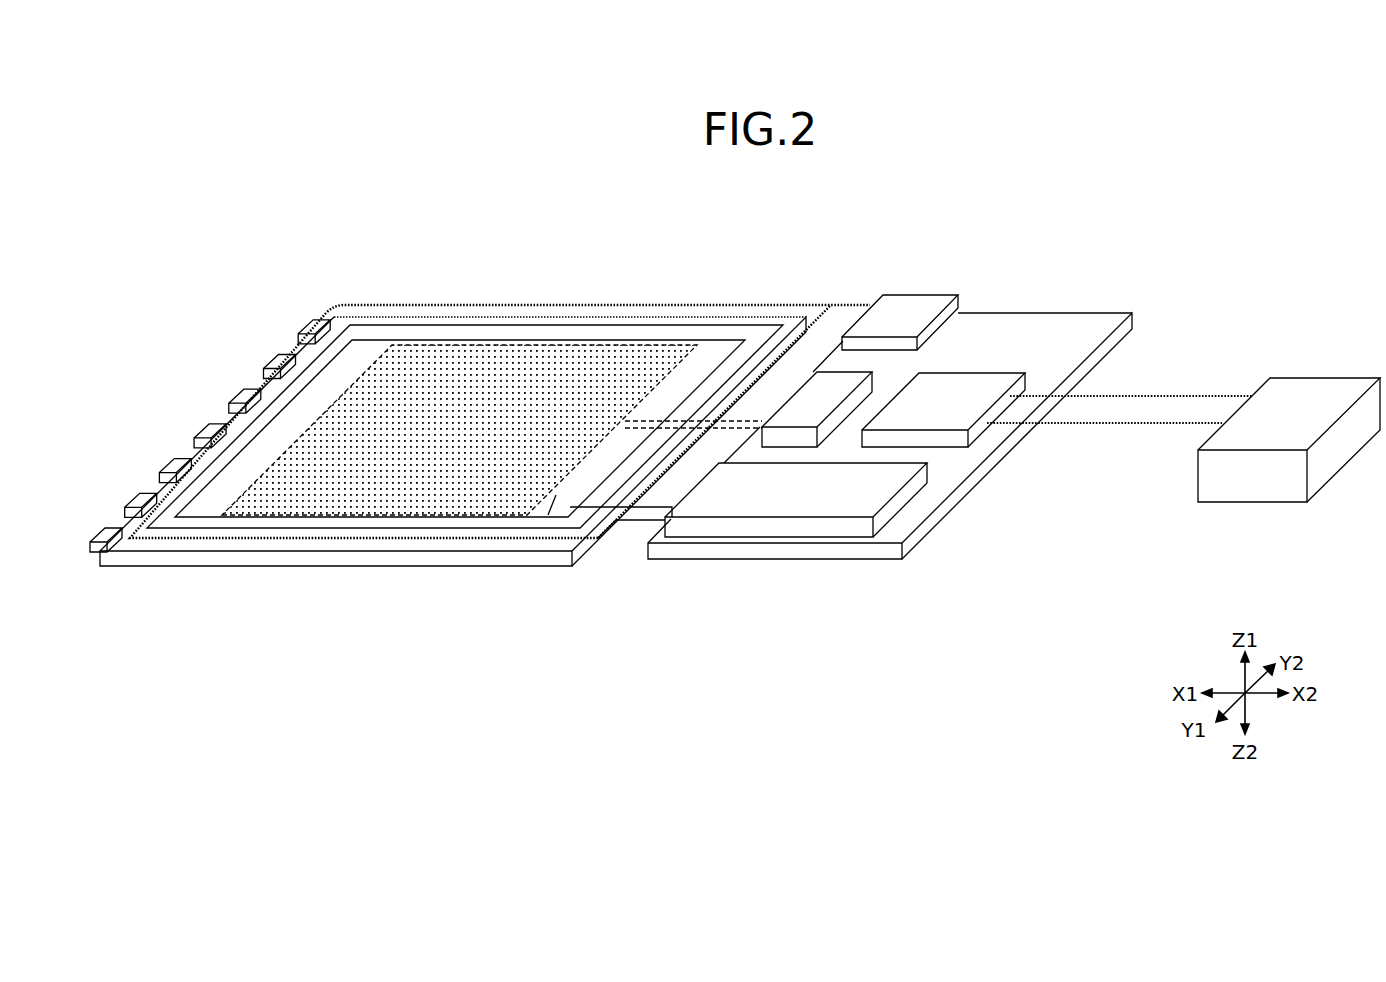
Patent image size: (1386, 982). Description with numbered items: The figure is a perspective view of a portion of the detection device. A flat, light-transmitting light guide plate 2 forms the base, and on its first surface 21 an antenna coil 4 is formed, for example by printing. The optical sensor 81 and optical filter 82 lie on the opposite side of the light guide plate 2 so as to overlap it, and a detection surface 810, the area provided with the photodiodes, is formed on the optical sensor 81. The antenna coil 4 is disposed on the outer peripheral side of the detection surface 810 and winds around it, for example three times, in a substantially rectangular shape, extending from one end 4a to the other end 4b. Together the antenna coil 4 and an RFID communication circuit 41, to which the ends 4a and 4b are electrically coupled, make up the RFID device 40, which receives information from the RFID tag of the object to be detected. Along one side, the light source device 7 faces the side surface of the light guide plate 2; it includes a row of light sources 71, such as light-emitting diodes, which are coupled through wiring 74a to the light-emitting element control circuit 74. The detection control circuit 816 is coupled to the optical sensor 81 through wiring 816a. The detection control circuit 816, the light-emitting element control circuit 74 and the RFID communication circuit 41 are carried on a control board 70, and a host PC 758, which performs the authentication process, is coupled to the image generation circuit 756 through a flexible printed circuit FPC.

The light guide plate 2 is at (170, 568).
The first surface 21 is at (205, 545).
The antenna coil 4 is at (404, 322).
The RFID device 40 is at (528, 447).
The RFID communication circuit 41 is at (726, 505).
The end of the antenna coil 4a is at (647, 524).
The end of the antenna coil 4b is at (660, 504).
The light source device 7 is at (170, 467).
The light sources 71 is at (210, 393).
The light-emitting element control circuit 74 is at (913, 308).
The wiring 74a is at (605, 306).
The optical sensor 81 is at (459, 488).
The optical filter 82 is at (386, 490).
The detection surface 810 is at (556, 497).
The detection control circuit 816 is at (795, 415).
The wiring 816a is at (749, 420).
The control board 70 is at (1103, 306).
The image generation circuit 756 is at (958, 398).
The host PC 758 is at (1318, 390).
The flexible printed circuit FPC is at (1072, 415).